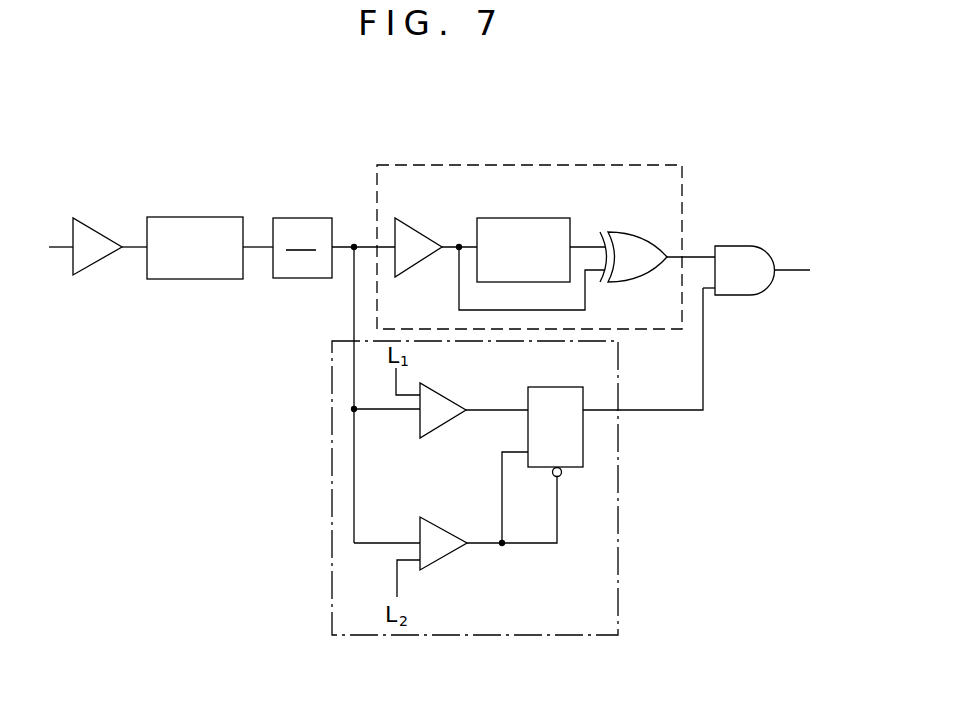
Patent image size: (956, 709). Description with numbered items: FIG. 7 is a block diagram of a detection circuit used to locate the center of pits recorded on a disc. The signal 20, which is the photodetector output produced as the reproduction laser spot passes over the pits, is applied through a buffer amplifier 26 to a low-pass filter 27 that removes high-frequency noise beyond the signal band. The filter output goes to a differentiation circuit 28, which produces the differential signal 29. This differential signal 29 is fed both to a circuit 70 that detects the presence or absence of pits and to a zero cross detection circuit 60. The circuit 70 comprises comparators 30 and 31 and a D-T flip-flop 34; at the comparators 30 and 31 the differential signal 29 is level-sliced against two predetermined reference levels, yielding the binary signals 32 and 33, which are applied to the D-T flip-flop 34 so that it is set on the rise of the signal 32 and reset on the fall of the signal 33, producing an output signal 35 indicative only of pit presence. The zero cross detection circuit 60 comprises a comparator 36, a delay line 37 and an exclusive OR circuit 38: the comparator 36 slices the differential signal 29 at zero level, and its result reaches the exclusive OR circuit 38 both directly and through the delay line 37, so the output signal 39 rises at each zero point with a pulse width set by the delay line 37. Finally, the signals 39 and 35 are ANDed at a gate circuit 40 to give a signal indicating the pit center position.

The signal 20 is at (56, 247).
The buffer amplifier 26 is at (97, 232).
The low-pass filter 27 is at (208, 217).
The differentiation circuit 28 is at (313, 218).
The differential signal 29 is at (354, 308).
The comparator 30 is at (446, 397).
The comparator 31 is at (445, 531).
The signal 32 is at (495, 410).
The signal 33 is at (535, 544).
The D-T flip-flop 34 is at (571, 387).
The output signal 35 is at (668, 411).
The comparator 36 is at (424, 236).
The delay line 37 is at (533, 218).
The exclusive OR circuit 38 is at (641, 232).
The output signal 39 is at (699, 257).
The gate circuit 40 is at (752, 246).
The zero cross detection circuit 60 is at (643, 165).
The circuit 70 is at (618, 600).